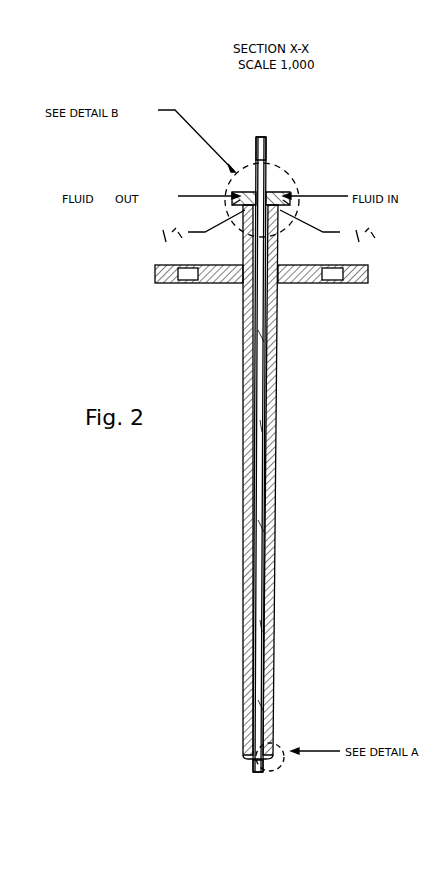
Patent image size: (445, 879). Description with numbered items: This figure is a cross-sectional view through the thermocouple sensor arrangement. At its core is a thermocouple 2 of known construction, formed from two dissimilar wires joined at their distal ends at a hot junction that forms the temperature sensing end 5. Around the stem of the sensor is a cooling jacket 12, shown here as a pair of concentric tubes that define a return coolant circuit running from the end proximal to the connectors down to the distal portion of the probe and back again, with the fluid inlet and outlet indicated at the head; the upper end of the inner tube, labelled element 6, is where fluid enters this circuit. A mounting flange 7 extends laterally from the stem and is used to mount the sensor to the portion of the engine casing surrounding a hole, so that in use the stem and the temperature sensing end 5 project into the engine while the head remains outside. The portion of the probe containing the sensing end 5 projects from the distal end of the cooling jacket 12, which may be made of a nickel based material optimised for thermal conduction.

The thermocouple 2 is at (258, 565).
The temperature sensing end 5 is at (255, 770).
The inlet end of inner tube 6 is at (285, 150).
The mounting flange 7 is at (365, 280).
The cooling jacket 12 is at (277, 393).